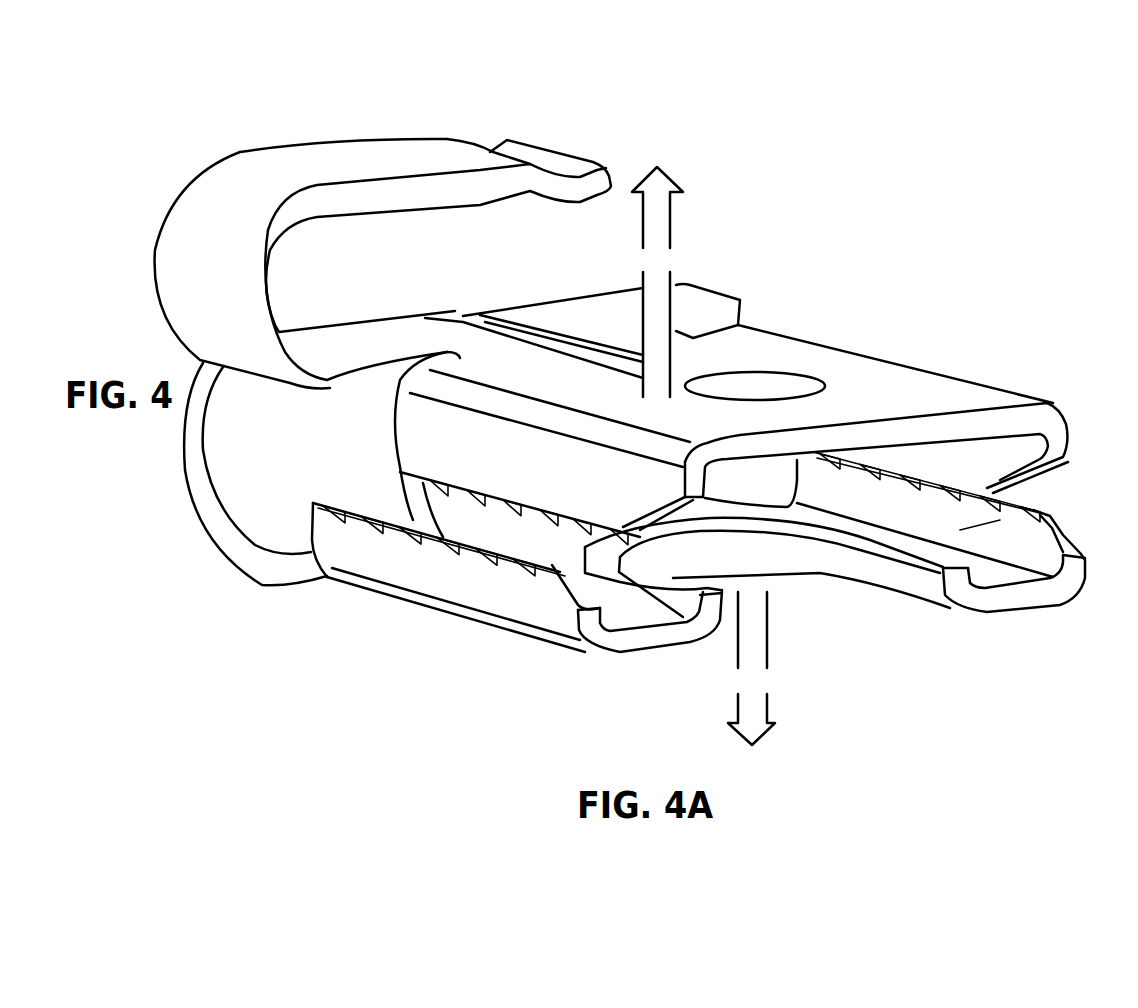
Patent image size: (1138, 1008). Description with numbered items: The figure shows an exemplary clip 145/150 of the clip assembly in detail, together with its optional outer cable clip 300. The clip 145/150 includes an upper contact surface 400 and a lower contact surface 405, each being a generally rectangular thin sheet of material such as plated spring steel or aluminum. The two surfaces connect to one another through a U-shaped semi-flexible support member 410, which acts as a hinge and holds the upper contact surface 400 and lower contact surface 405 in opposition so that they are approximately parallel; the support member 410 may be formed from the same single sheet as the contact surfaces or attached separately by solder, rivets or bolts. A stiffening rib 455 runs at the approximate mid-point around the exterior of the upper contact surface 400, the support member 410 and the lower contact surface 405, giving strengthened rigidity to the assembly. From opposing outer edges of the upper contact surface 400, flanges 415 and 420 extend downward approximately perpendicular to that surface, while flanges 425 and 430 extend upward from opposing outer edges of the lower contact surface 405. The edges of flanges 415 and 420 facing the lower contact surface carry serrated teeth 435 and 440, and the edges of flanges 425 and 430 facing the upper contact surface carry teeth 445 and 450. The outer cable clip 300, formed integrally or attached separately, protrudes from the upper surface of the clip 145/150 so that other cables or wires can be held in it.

In FIG. 4, the outer cable clip 300 is at (178, 200).
In FIG. 4, the U-shaped support member 410 is at (172, 457).
In FIG. 4A, the clip 145 is at (723, 406).
In FIG. 4A, the clip 150 is at (723, 464).
In FIG. 4A, the upper contact surface 400 is at (830, 362).
In FIG. 4A, the lower contact surface 405 is at (943, 632).
In FIG. 4A, the flange 415 is at (1072, 456).
In FIG. 4A, the flange 420 is at (618, 502).
In FIG. 4A, the flange 425 is at (1075, 526).
In FIG. 4A, the flange 430 is at (380, 562).
In FIG. 4A, the teeth 435 is at (912, 458).
In FIG. 4A, the teeth 440 is at (558, 530).
In FIG. 4A, the teeth 445 is at (992, 515).
In FIG. 4A, the teeth 450 is at (478, 556).
In FIG. 4A, the stiffening rib 455 is at (450, 298).